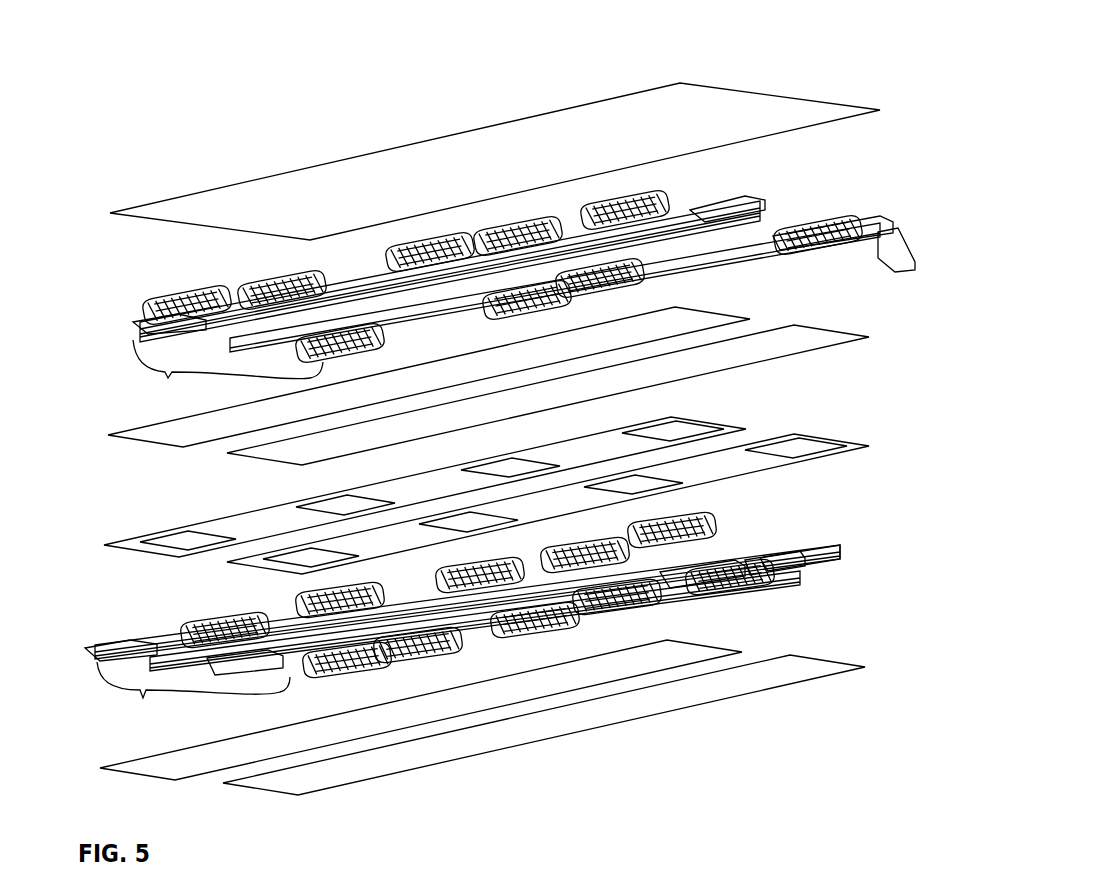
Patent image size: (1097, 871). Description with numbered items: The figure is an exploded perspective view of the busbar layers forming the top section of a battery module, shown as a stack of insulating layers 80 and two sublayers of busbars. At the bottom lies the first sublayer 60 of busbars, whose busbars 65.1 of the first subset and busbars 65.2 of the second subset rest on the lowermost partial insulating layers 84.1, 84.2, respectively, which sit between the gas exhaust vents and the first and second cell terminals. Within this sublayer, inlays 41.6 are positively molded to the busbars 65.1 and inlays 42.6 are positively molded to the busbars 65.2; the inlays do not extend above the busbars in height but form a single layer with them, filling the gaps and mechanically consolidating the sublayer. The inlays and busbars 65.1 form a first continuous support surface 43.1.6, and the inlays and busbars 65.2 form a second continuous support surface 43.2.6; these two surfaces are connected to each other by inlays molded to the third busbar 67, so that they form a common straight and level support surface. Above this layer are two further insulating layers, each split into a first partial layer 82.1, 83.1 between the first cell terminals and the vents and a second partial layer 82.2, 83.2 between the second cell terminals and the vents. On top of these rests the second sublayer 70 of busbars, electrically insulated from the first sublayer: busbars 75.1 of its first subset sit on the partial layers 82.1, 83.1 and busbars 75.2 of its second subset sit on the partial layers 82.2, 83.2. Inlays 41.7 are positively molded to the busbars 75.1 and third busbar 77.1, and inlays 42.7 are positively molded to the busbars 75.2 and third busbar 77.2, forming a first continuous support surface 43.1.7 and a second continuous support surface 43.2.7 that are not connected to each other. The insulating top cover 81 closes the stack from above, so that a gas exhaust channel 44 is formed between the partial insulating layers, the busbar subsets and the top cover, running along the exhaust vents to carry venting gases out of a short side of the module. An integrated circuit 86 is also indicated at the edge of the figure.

The insulating layers 80 is at (495, 142).
The insulating top cover 81 is at (756, 106).
The first partial layer of insulating layer 82 82.1 is at (158, 433).
The second partial layer of insulating layer 82 82.2 is at (820, 334).
The first partial layer of insulating layer 83 83.1 is at (688, 430).
The second partial layer of insulating layer 83 83.2 is at (798, 445).
The insulating layer 84.1 is at (157, 762).
The insulating layer 84.2 is at (782, 673).
The second sublayer of busbars 70 is at (481, 277).
The first sublayer of busbars 60 is at (480, 601).
The inlays 41.7 is at (419, 246).
The inlays 42.7 is at (575, 253).
The inlays 41.6 is at (480, 572).
The inlays 42.6 is at (513, 628).
The first continuous support surface 43.1.7 is at (150, 322).
The second continuous support surface 43.2.7 is at (802, 216).
The first continuous support surface 43.1.6 is at (703, 540).
The second continuous support surface 43.2.6 is at (805, 545).
The gas exhaust channel 44 is at (748, 546).
The third busbar 67 is at (285, 660).
The busbars of first subset of second sublayer 75.1 is at (503, 250).
The busbars of second subset of second sublayer 75.2 is at (717, 237).
The busbars of first subset of first sublayer 65.1 is at (642, 553).
The busbars of second subset of first sublayer 65.2 is at (667, 577).
The third busbar 77.1 is at (718, 208).
The third busbar 77.2 is at (868, 240).
The integrated circuit (IC) 86 is at (826, 870).